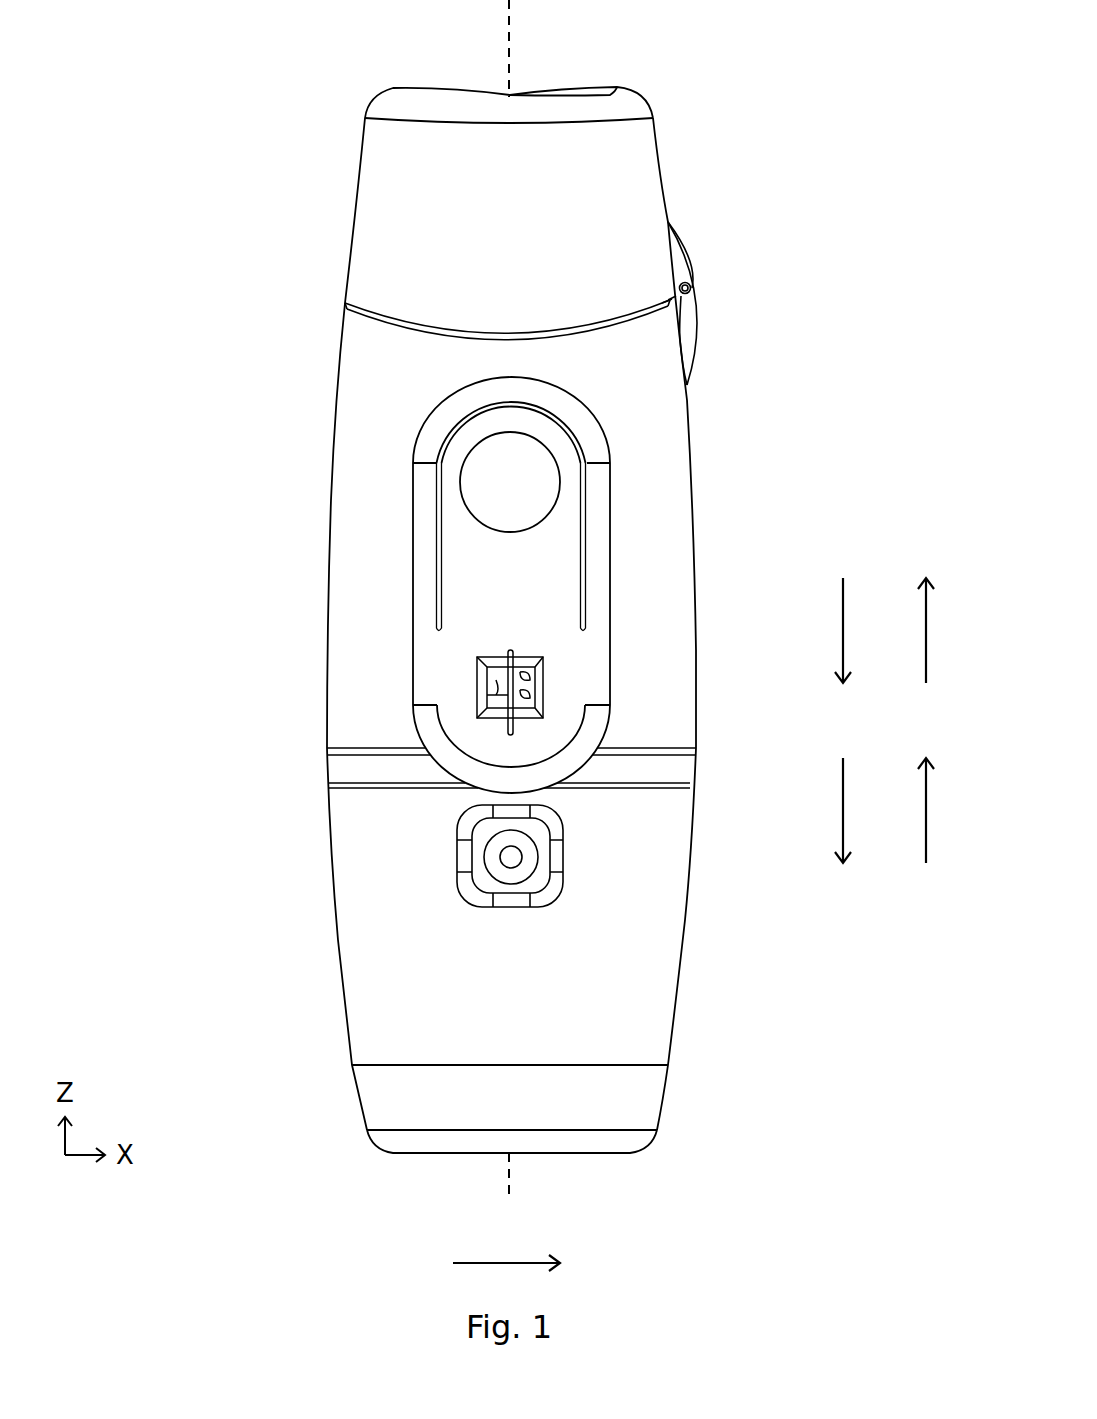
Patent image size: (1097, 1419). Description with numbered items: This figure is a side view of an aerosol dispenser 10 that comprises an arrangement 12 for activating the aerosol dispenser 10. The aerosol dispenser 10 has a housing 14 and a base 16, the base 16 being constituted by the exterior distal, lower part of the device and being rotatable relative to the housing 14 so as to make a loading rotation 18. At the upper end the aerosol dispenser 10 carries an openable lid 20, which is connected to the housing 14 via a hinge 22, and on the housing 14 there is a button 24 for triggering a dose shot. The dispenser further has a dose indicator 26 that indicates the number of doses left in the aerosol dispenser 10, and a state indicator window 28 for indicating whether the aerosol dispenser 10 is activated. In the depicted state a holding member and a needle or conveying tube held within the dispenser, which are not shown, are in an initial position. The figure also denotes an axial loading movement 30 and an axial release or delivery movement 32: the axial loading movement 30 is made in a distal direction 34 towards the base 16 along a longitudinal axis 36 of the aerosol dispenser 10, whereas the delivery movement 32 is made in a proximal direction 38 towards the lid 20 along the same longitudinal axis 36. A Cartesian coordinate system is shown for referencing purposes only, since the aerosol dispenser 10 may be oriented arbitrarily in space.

The aerosol dispenser 10 is at (176, 36).
The arrangement 12 is at (181, 403).
The housing 14 is at (511, 544).
The base 16 is at (510, 1009).
The loading rotation 18 is at (506, 1250).
The openable lid 20 is at (509, 158).
The hinge 22 is at (691, 288).
The button 24 is at (511, 585).
The dose indicator 26 is at (483, 688).
The state indicator window 28 is at (463, 858).
The axial loading movement 30 is at (861, 630).
The axial release movement or delivery movement 32 is at (944, 630).
The distal direction 34 is at (861, 810).
The longitudinal axis 36 is at (512, 33).
The proximal direction 38 is at (944, 810).